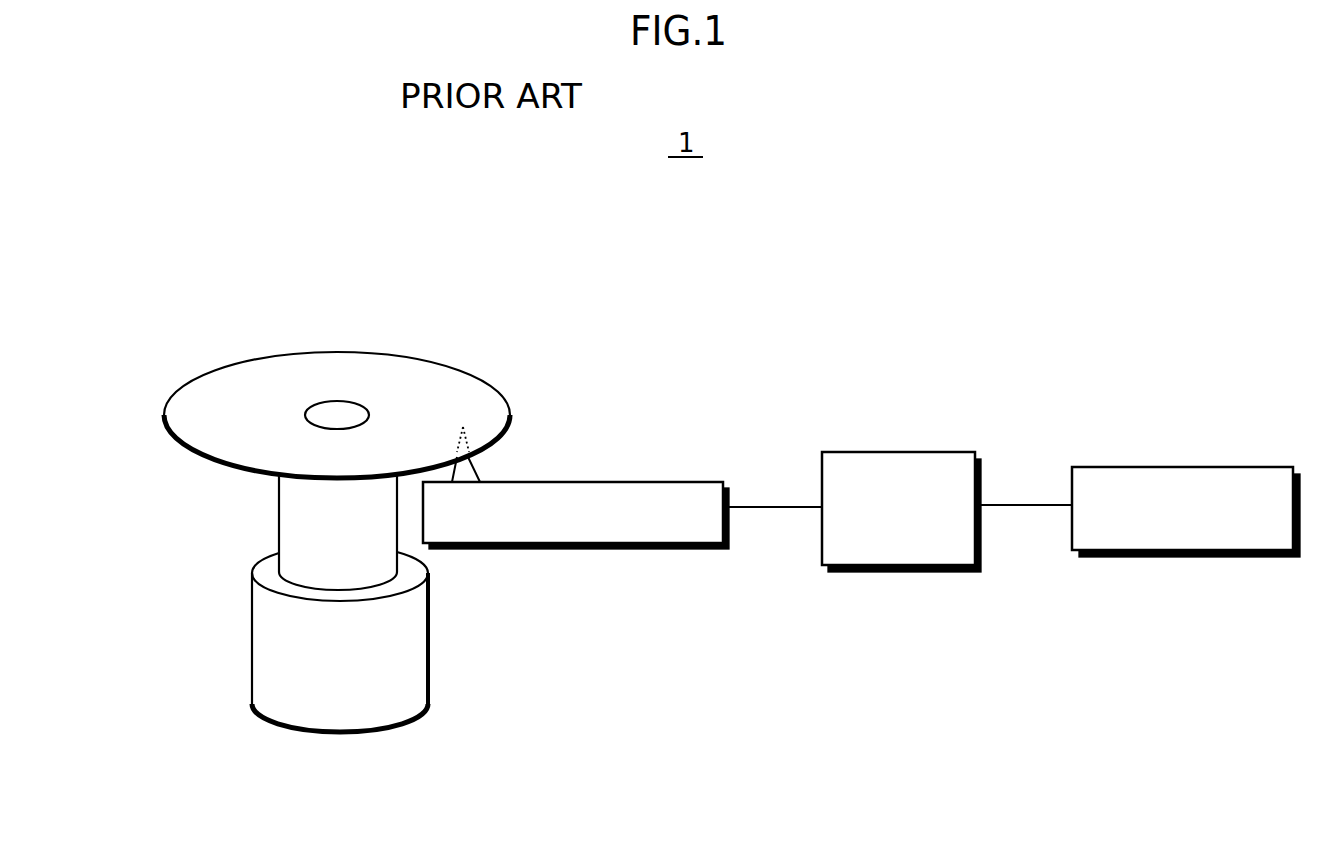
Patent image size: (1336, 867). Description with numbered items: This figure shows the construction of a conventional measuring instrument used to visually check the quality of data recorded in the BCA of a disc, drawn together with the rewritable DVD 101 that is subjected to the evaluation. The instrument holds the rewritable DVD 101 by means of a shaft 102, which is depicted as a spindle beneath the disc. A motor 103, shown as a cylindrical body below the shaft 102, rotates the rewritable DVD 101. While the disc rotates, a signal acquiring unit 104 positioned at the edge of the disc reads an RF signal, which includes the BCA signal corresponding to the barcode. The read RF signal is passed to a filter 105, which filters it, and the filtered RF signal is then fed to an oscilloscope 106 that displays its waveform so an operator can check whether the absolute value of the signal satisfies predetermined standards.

The rewritable DVD 101 is at (377, 385).
The shaft 102 is at (303, 522).
The motor 103 is at (278, 643).
The signal acquiring unit 104 is at (545, 480).
The filter 105 is at (905, 451).
The oscilloscope 106 is at (1195, 466).